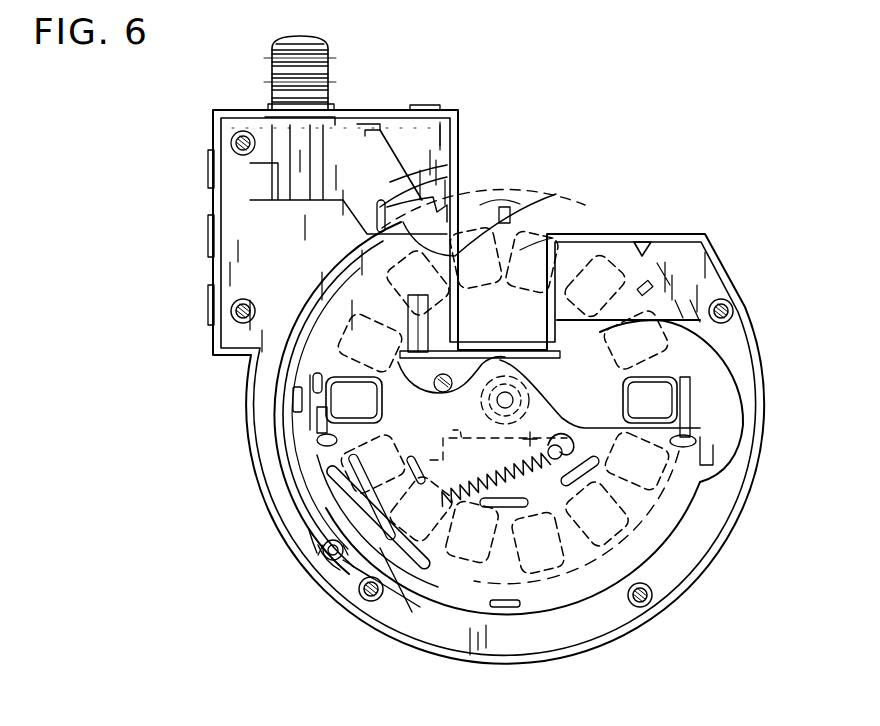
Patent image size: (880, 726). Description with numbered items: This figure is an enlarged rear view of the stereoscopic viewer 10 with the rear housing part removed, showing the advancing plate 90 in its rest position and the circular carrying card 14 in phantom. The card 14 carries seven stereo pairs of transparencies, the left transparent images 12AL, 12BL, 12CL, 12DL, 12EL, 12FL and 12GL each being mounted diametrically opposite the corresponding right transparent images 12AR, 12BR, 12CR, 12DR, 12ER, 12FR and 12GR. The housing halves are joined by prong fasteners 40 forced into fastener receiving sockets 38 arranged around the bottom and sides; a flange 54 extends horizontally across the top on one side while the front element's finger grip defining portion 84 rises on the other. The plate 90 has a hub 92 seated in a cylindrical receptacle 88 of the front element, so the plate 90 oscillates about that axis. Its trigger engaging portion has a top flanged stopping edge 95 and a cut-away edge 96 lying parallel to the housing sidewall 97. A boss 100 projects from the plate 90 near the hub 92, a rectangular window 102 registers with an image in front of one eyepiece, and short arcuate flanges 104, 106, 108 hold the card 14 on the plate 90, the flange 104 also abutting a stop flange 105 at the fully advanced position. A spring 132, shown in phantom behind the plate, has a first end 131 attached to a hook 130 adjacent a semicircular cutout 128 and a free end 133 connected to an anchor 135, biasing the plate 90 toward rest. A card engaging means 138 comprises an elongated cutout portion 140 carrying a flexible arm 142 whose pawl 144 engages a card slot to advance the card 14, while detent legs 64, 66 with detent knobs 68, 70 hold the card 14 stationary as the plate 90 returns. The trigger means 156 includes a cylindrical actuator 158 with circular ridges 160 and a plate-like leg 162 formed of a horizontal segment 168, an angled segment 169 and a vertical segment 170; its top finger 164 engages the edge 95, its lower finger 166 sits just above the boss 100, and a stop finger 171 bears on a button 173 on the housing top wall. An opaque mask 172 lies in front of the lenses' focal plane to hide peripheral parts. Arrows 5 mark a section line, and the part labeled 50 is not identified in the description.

The stereoscopic viewer 10 is at (514, 72).
The circular carrying card 14 is at (577, 205).
The fastener receiving sockets 38 is at (232, 297).
The prong fasteners 40 is at (243, 131).
The outer housing wall 50 is at (590, 648).
The flange 54 is at (668, 234).
The resilient leg 64 is at (316, 419).
The resilient leg 66 is at (692, 406).
The detent knob 68 is at (320, 438).
The detent knob 70 is at (696, 436).
The finger grip defining portion 84 is at (440, 137).
The cylindrical receptacle 88 is at (530, 385).
The advancing plate 90 is at (335, 500).
The hub 92 is at (454, 426).
The top flanged stopping edge 95 is at (407, 231).
The edge 96 is at (507, 232).
The sidewall 97 is at (553, 237).
The boss 100 is at (479, 387).
The rectangular window 102 is at (312, 378).
The arcuate flange 104 is at (712, 447).
The stop flange 105 is at (638, 242).
The arcuate flange 106 is at (505, 608).
The arcuate flange 108 is at (292, 398).
The semicircular cutout 128 is at (556, 428).
The hook 130 is at (566, 445).
The first end 131 is at (541, 427).
The spring 132 is at (498, 449).
The free end 133 is at (323, 550).
The anchor 135 is at (315, 562).
The card engaging means 138 is at (355, 587).
The elongated cutout portion 140 is at (407, 628).
The flexible arm 142 is at (345, 528).
The pawl 144 is at (380, 615).
The trigger means 156 is at (390, 182).
The cylindrical actuator 158 is at (337, 53).
The circular ridges 160 is at (278, 74).
The plate-like leg 162 is at (449, 165).
The top finger 164 is at (449, 177).
The lower finger 166 is at (470, 342).
The horizontal segment 168 is at (379, 164).
The angled segment 169 is at (450, 200).
The vertical segment 170 is at (430, 304).
The stop finger 171 is at (407, 146).
The opaque mask 172 is at (298, 345).
The button 173 is at (365, 122).
The lever 5 is at (343, 441).
The left transparent image 12AL is at (650, 400).
The right transparent image 12AR is at (354, 400).
The left transparent image 12BL is at (597, 513).
The right transparent image 12BR is at (417, 282).
The left transparent image 12CL is at (472, 532).
The right transparent image 12CR is at (531, 262).
The left transparent image 12DL is at (373, 464).
The right transparent image 12DR is at (636, 340).
The left transparent image 12EL is at (369, 343).
The right transparent image 12ER is at (636, 461).
The left transparent image 12FL is at (476, 258).
The right transparent image 12FR is at (537, 543).
The left transparent image 12GL is at (594, 286).
The right transparent image 12GR is at (420, 508).